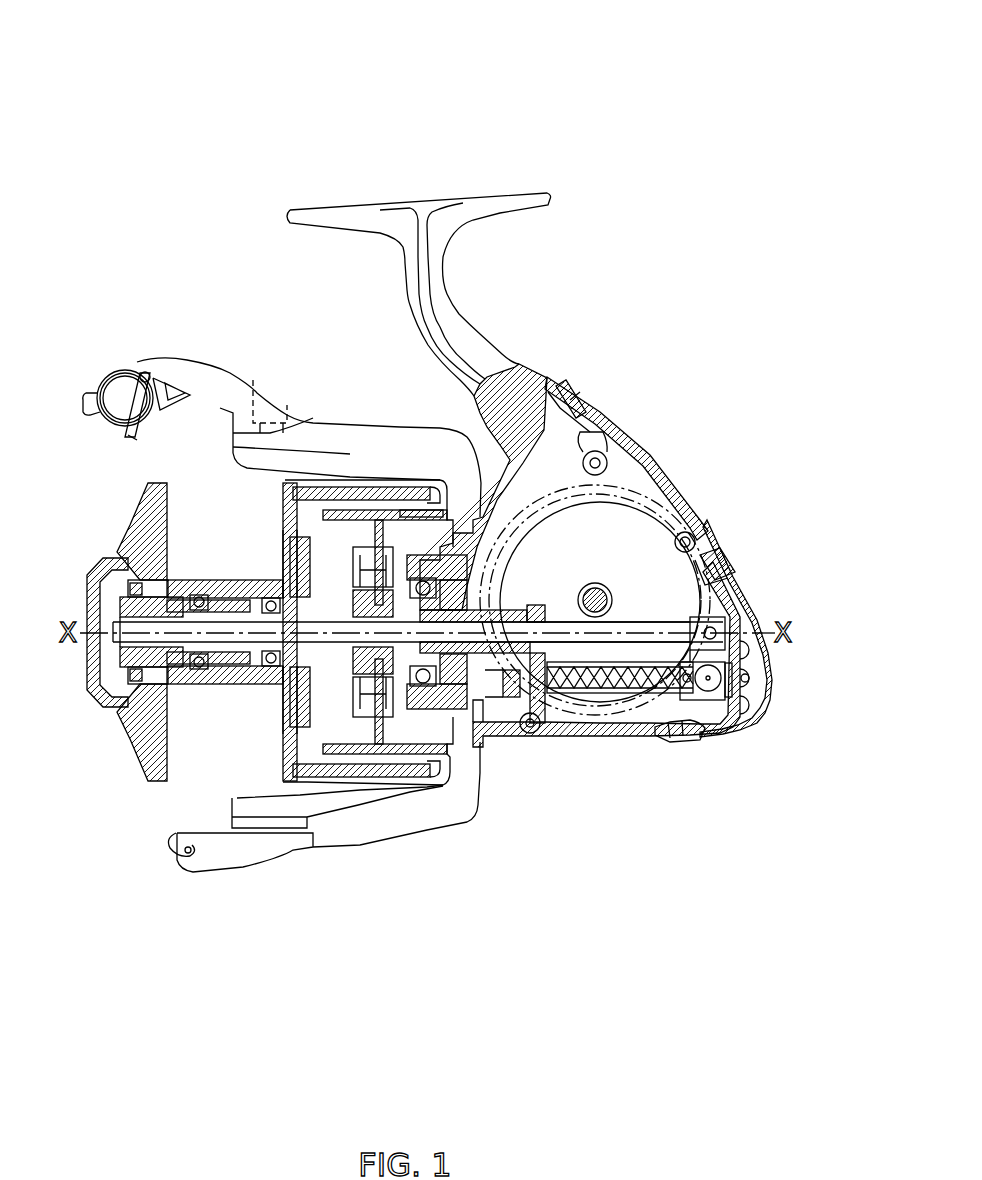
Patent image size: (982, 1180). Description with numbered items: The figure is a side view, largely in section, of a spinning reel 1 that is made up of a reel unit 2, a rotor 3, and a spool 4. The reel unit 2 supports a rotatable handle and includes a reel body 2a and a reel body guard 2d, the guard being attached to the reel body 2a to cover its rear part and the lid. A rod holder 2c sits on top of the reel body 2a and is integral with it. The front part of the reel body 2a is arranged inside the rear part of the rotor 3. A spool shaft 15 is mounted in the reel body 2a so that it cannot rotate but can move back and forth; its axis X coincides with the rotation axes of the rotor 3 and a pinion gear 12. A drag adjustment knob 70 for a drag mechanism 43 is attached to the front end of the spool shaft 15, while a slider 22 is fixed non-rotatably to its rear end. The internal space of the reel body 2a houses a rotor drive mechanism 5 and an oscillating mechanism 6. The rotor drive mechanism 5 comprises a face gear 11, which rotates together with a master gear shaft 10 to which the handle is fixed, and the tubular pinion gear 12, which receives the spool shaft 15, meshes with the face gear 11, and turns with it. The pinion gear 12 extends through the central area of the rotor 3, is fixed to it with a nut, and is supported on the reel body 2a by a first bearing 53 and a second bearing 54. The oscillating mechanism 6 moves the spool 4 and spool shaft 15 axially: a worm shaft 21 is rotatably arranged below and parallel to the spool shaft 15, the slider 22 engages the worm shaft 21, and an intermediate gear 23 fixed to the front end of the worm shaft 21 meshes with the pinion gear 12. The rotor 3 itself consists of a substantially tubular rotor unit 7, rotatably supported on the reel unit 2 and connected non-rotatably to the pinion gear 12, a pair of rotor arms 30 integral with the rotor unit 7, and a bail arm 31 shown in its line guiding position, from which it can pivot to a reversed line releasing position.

The spinning reel 1 is at (553, 76).
The reel unit 2 is at (585, 748).
The reel body 2a is at (497, 730).
The rod holder 2c is at (516, 196).
The reel body guard 2d is at (773, 677).
The rotor 3 is at (282, 611).
The spool 4 is at (213, 632).
The rotor drive mechanism 5 is at (595, 534).
The oscillating mechanism 6 is at (610, 662).
The rotor unit 7 is at (343, 518).
The master gear shaft 10 is at (606, 590).
The face gear 11 is at (613, 483).
The pinion gear 12 is at (640, 560).
The spool shaft 15 is at (650, 660).
The worm shaft 21 is at (647, 642).
The slider 22 is at (710, 707).
The intermediate gear 23 is at (533, 725).
The rotor arms 30 is at (381, 424).
The bail arm 31 is at (168, 362).
The drag mechanism 43 is at (283, 688).
The first bearing 53 is at (480, 742).
The second bearing 54 is at (360, 690).
The drag adjustment knob 70 is at (105, 706).